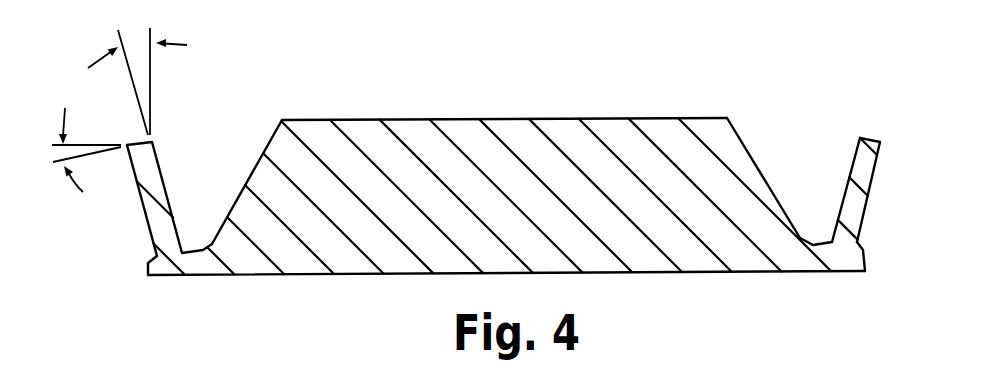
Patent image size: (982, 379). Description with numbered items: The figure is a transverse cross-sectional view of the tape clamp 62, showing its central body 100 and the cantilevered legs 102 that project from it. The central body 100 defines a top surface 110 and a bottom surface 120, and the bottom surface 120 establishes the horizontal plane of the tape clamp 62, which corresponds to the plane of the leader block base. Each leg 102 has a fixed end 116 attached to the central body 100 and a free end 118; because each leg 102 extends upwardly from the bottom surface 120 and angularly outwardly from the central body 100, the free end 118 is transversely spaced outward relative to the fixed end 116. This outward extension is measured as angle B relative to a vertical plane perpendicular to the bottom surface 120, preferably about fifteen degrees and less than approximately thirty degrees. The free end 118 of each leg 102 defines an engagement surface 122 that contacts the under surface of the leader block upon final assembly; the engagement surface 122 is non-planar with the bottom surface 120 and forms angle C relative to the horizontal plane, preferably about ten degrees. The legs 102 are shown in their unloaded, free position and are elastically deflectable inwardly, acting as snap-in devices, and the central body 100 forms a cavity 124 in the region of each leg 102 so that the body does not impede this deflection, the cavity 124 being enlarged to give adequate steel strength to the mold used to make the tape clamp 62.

The tape clamp 62 is at (489, 48).
The central body 100 is at (663, 281).
The cantilevered leg 102 is at (185, 213).
The top surface 110 is at (552, 118).
The fixed end 116 is at (860, 249).
The free end 118 is at (880, 156).
The bottom surface 120 is at (310, 277).
The engagement surface 122 is at (873, 135).
The cavity 124 is at (792, 163).
The angle B is at (137, 81).
The angle C is at (86, 163).